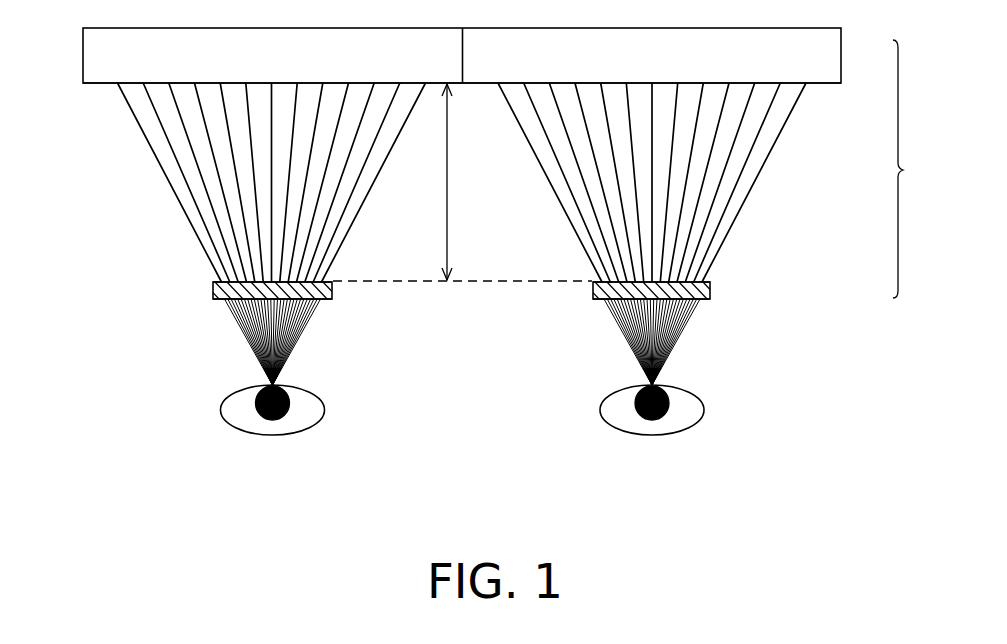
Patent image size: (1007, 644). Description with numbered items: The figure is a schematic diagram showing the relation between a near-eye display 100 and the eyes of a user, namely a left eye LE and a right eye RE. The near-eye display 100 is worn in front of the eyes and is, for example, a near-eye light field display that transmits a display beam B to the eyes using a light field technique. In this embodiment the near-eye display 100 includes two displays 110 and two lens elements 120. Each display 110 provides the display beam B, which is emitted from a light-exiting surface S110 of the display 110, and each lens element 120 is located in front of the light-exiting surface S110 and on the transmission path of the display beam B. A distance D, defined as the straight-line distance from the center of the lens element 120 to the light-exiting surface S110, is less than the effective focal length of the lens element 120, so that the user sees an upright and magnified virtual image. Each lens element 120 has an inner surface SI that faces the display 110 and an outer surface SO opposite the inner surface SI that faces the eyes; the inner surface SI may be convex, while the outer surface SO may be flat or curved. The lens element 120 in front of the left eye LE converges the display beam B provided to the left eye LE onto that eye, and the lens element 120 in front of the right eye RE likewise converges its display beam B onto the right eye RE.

The near-eye display 100 is at (920, 169).
The display 110 is at (84, 57).
The light-exiting surface S110 is at (100, 85).
The lens element 120 is at (213, 294).
The inner surface SI is at (326, 280).
The outer surface SO is at (326, 302).
The display beam B is at (181, 205).
The distance D is at (462, 182).
The left eye LE is at (307, 432).
The right eye RE is at (617, 432).